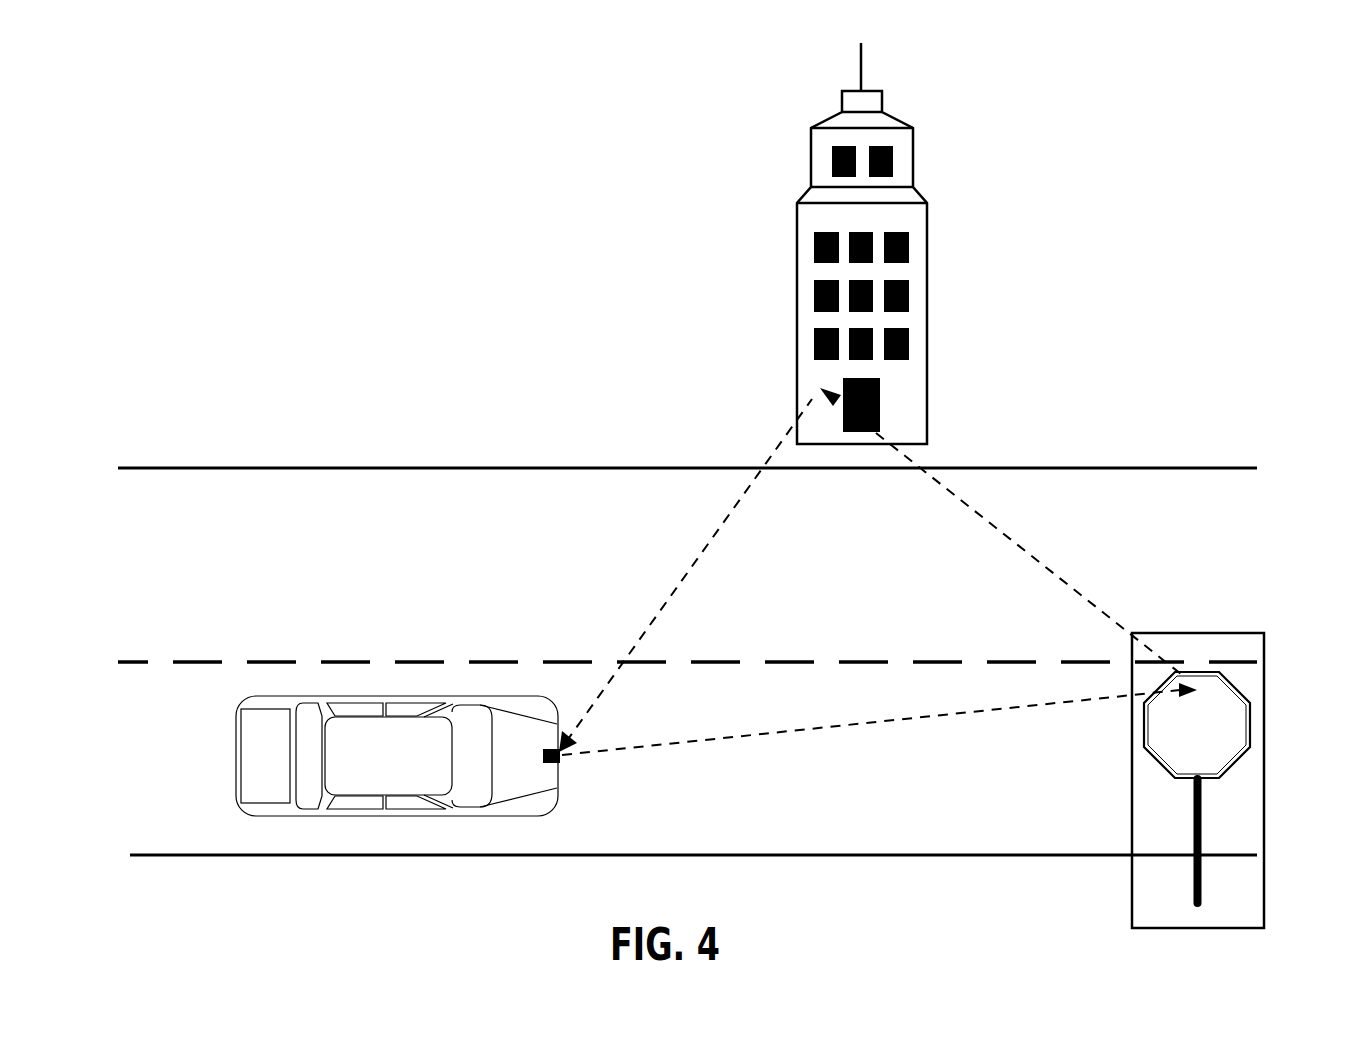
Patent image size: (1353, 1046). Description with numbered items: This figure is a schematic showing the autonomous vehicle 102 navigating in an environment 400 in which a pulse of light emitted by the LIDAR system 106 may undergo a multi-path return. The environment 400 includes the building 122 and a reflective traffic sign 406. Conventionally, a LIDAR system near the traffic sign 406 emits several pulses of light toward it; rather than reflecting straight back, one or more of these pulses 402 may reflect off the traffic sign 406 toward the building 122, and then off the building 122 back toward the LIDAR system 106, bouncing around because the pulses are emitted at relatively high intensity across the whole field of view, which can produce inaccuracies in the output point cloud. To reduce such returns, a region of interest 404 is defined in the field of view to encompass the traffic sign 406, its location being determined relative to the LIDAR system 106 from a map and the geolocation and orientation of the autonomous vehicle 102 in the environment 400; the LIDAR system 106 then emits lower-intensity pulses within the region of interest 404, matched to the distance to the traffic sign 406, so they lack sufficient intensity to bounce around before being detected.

The environment 400 is at (338, 263).
The building 122 is at (927, 249).
The autonomous vehicle 102 is at (236, 733).
The LIDAR system 106 is at (551, 764).
The light pulses 402 is at (712, 542).
The region of interest 404 is at (1265, 668).
The traffic sign 406 is at (1252, 720).